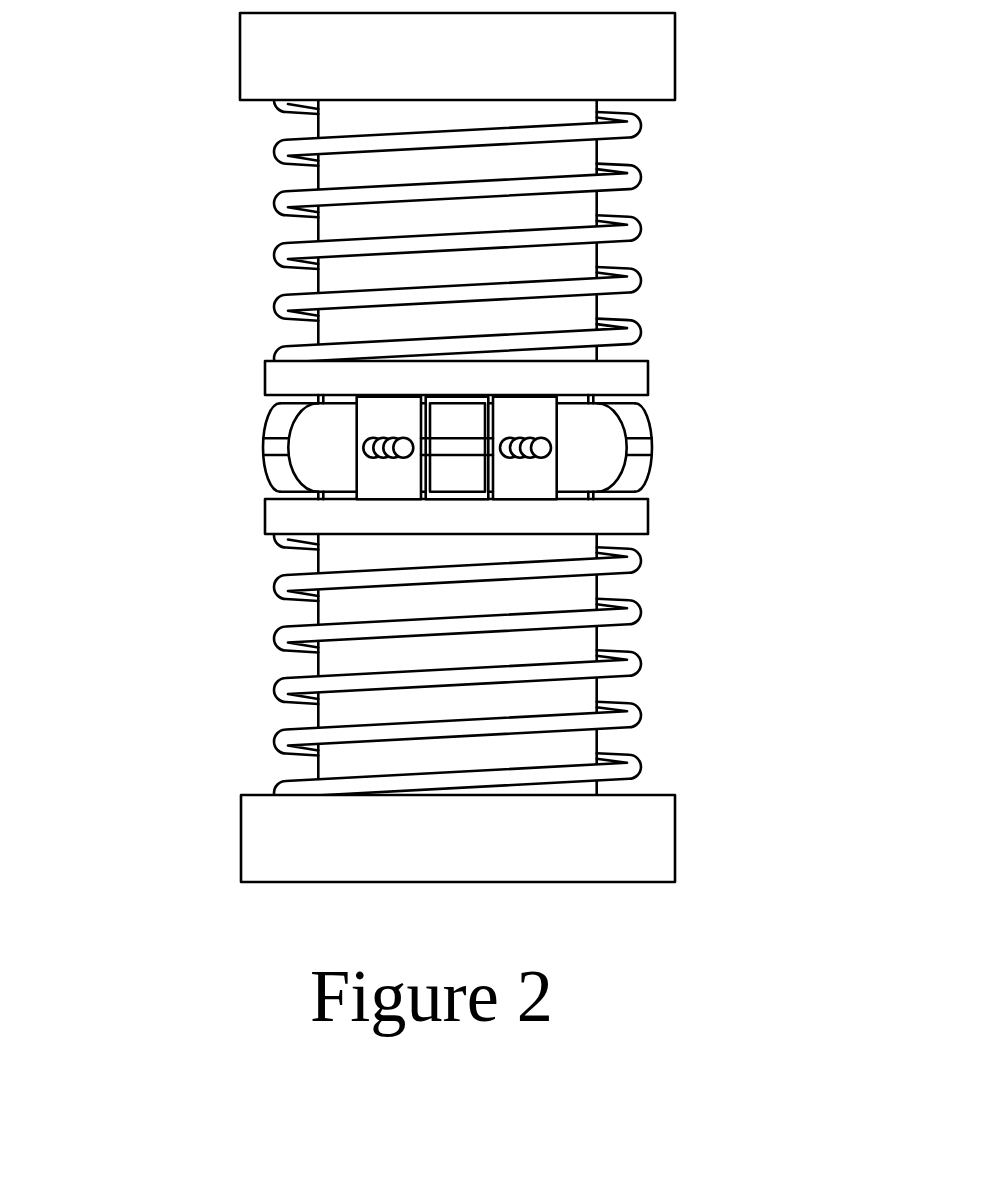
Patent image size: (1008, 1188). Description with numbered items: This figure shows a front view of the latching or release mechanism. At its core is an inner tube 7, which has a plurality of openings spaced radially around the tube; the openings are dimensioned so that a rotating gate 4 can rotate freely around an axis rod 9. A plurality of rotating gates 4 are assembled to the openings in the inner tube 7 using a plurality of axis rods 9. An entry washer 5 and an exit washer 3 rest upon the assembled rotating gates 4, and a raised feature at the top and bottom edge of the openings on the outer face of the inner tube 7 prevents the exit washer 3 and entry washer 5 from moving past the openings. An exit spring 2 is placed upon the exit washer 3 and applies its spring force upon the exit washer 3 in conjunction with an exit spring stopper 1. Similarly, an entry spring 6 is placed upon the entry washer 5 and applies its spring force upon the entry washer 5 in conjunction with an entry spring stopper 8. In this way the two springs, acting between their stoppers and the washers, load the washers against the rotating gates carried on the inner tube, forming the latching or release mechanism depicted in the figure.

The exit spring stopper 1 is at (240, 47).
The exit spring 2 is at (273, 254).
The exit washer 3 is at (272, 376).
The rotating gate 4 is at (638, 450).
The entry washer 5 is at (638, 521).
The entry spring 6 is at (627, 614).
The inner tube 7 is at (568, 707).
The entry spring stopper 8 is at (678, 836).
The axis rod 9 is at (365, 452).